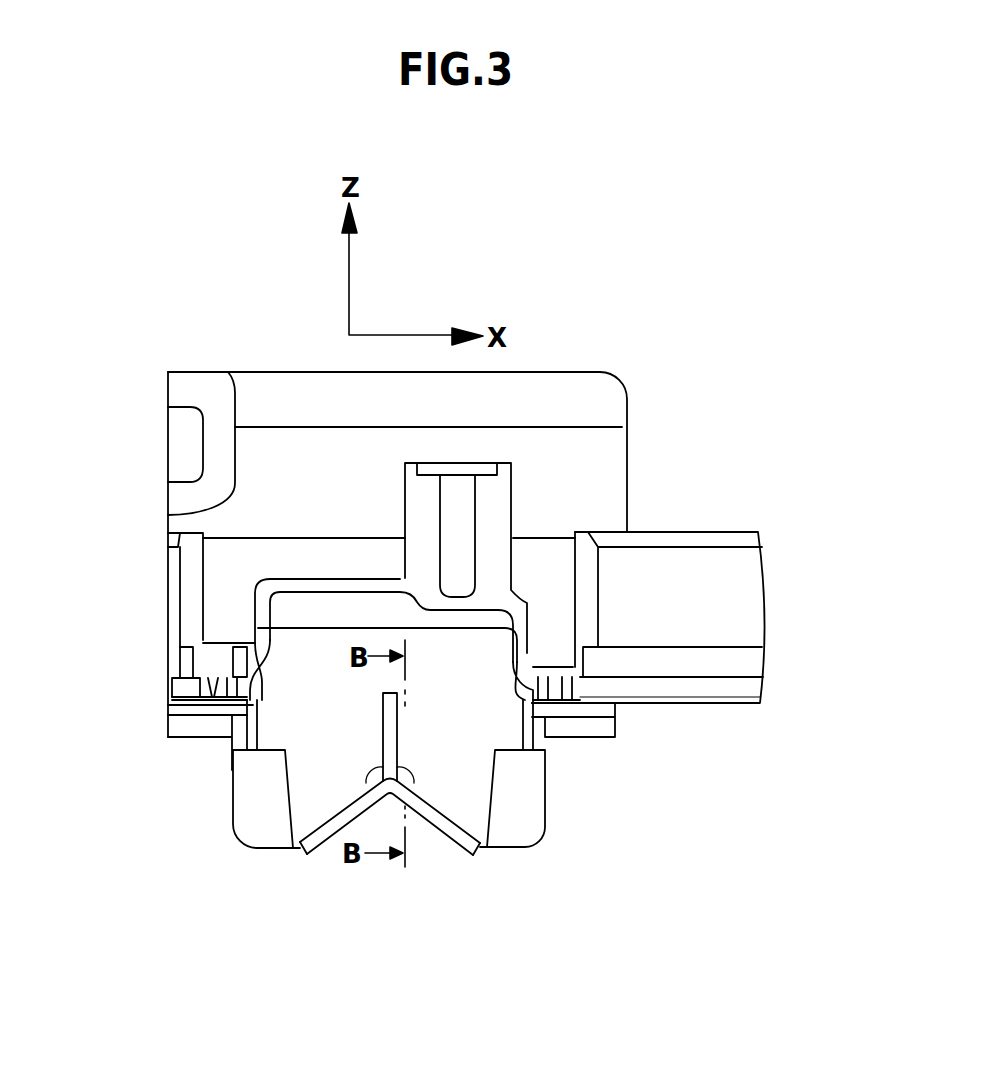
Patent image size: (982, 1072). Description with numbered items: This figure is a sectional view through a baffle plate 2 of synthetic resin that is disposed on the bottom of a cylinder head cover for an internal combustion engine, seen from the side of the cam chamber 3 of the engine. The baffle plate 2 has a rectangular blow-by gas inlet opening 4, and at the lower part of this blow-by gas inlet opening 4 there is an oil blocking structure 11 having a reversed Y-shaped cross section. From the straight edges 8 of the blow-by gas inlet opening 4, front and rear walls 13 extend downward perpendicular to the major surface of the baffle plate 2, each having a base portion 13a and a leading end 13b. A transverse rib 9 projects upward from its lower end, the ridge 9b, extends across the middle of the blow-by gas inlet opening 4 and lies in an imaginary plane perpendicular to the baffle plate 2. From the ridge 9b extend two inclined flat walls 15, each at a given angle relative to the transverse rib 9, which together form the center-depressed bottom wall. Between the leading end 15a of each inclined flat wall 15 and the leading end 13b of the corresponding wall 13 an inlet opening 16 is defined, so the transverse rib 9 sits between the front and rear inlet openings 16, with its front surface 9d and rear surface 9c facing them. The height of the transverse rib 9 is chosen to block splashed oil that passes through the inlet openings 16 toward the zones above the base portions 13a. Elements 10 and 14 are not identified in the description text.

The baffle plate 2 is at (747, 685).
The cam chamber 3 is at (722, 907).
The blow-by gas inlet opening 4 is at (293, 710).
The straight edge 8 is at (262, 683).
The transverse rib 9 is at (250, 817).
The ridge 9b is at (390, 787).
The rear surface 9c is at (397, 740).
The front surface 9d is at (383, 713).
The guide block 10 is at (250, 840).
The oil blocking structure 11 is at (520, 977).
The front and rear walls 13 is at (253, 710).
The base portion 13a is at (237, 663).
The leading end of front or rear wall 13b is at (383, 735).
The inner surface 14 is at (467, 813).
The inclined flat wall 15 is at (323, 833).
The leading end of inclined flat wall 15a is at (293, 857).
The inlet opening 16 is at (253, 852).